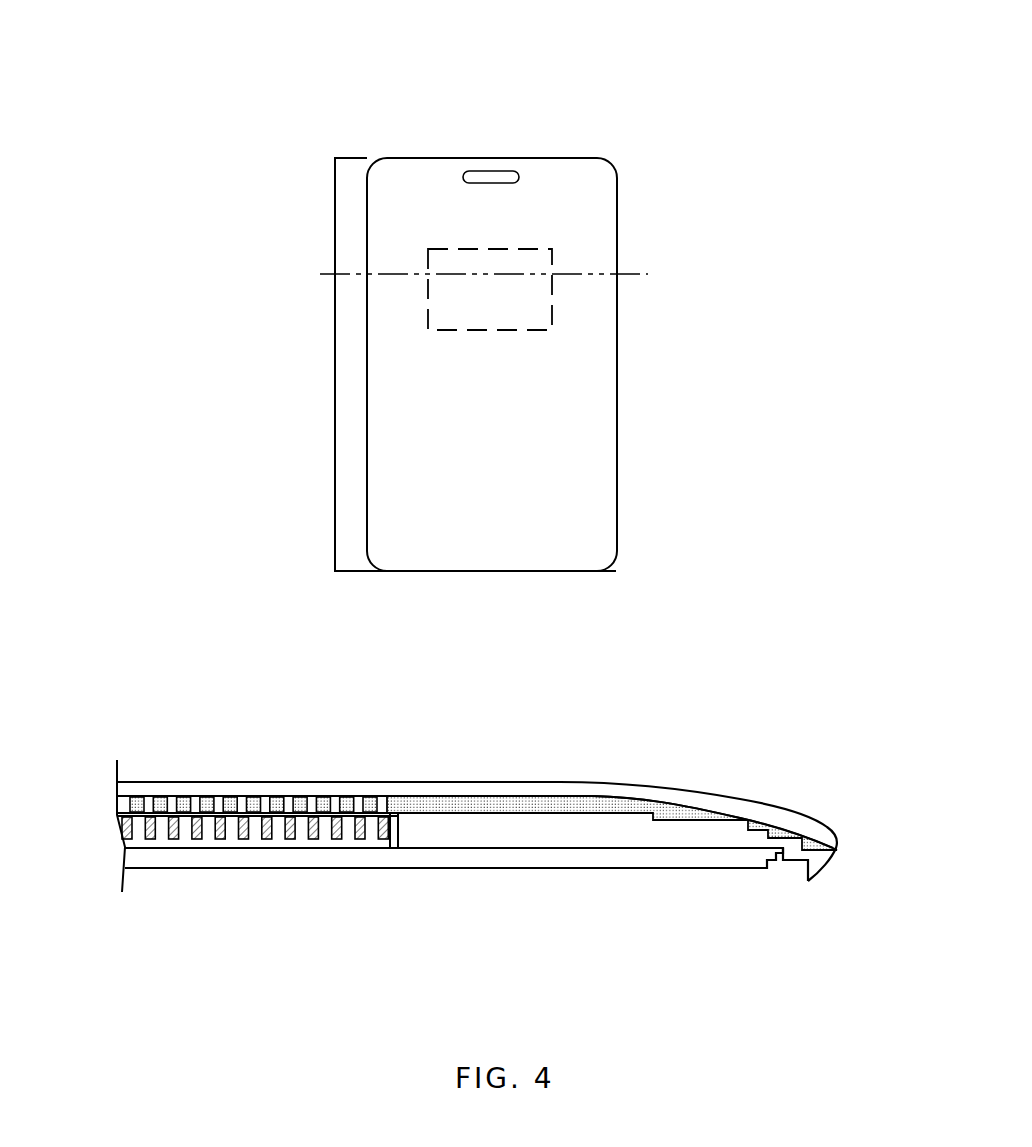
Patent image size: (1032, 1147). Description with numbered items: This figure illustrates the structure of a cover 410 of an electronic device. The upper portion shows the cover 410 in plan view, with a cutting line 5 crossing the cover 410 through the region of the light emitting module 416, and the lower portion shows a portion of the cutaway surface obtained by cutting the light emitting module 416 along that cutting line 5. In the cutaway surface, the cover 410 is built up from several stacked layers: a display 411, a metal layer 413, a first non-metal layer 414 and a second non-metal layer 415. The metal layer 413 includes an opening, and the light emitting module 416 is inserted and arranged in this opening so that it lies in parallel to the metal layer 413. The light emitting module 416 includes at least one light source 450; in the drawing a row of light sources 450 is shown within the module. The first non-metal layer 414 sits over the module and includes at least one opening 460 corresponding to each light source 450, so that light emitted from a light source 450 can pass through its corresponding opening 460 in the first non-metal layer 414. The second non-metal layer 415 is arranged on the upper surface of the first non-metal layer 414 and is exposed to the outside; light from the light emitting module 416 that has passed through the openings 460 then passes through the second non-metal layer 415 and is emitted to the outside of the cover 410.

The cover 410 is at (606, 76).
The cutting line 5 is at (633, 275).
The light emitting module 416 is at (552, 258).
The second non-metal layer 415 is at (680, 793).
The first non-metal layer 414 is at (757, 818).
The opening 460 is at (380, 799).
The light source 450 is at (382, 840).
The display 411 is at (665, 868).
The metal layer 413 is at (825, 860).